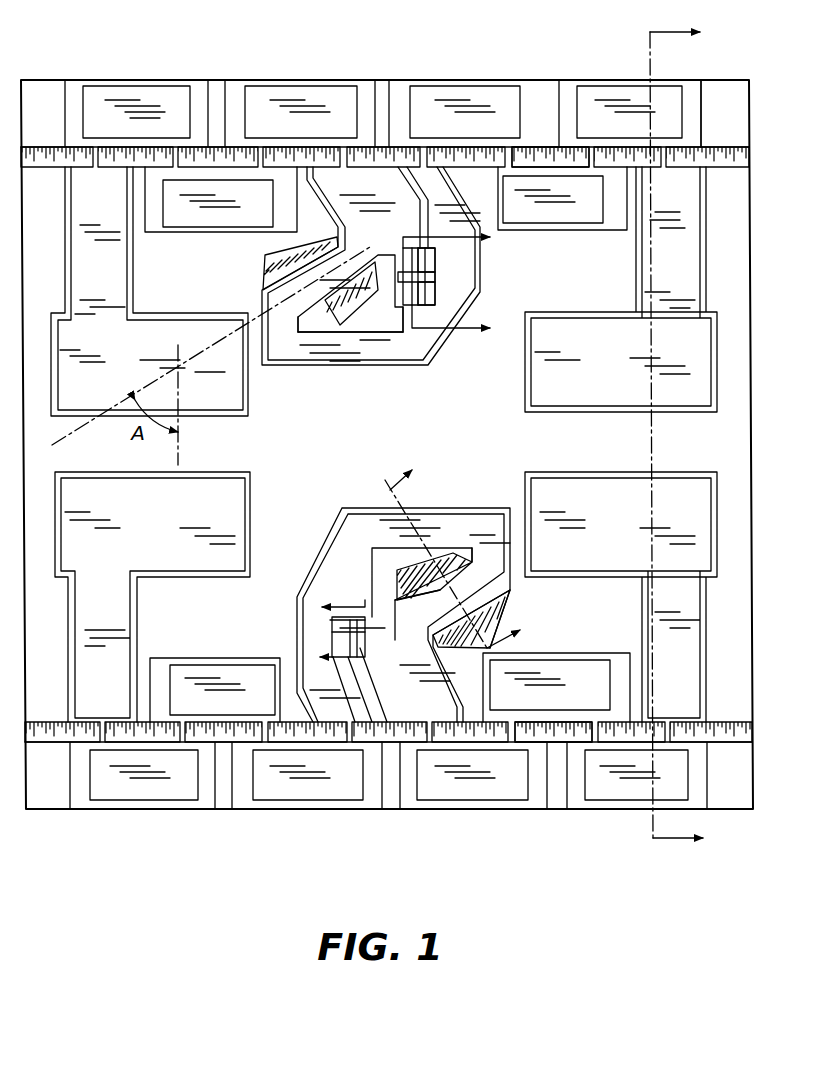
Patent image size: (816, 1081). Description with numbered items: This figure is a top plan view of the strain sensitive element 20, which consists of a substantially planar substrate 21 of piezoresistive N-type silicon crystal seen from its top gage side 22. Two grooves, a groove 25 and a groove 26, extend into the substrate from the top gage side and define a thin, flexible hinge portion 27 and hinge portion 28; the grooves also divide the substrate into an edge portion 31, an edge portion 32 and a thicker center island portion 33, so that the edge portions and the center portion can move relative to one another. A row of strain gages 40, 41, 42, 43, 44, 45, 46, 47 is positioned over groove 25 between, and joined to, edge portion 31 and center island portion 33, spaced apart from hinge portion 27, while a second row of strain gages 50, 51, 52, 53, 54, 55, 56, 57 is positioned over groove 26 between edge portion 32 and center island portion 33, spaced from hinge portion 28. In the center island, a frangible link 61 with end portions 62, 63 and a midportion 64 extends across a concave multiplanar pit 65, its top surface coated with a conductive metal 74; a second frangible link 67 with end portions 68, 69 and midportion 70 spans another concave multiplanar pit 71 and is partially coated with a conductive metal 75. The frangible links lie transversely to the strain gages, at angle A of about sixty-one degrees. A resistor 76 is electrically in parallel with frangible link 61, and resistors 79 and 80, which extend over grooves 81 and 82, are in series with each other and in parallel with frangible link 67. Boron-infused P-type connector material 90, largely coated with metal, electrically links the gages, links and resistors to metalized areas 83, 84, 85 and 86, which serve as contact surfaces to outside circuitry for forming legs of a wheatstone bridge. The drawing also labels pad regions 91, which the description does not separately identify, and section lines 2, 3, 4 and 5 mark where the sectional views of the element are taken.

The strain sensitive element 20 is at (140, 838).
The substrate 21 is at (88, 80).
The top gage side 22 is at (210, 800).
The groove 25 is at (600, 736).
The groove 26 is at (722, 152).
The hinge portion 27 is at (495, 736).
The hinge portion 28 is at (561, 147).
The edge portion 31 is at (390, 800).
The edge portion 32 is at (383, 90).
The center island portion 33 is at (386, 444).
The strain gage 40 is at (660, 736).
The strain gage 41 is at (605, 736).
The strain gage 42 is at (518, 736).
The strain gage 43 is at (432, 736).
The strain gage 44 is at (356, 736).
The strain gage 45 is at (340, 736).
The strain gage 46 is at (183, 735).
The strain gage 47 is at (103, 735).
The strain gage 50 is at (664, 158).
The strain gage 51 is at (592, 158).
The strain gage 52 is at (508, 158).
The strain gage 53 is at (425, 158).
The strain gage 54 is at (342, 158).
The strain gage 55 is at (263, 158).
The strain gage 56 is at (176, 158).
The strain gage 57 is at (99, 158).
The frangible link 61 is at (495, 600).
The end portion 62 is at (415, 700).
The end portion 63 is at (485, 550).
The midportion 64 is at (440, 545).
The concave multiplanar pit 65 is at (397, 580).
The frangible link 67 is at (330, 290).
The end portion 68 is at (365, 300).
The end portion 69 is at (283, 290).
The midportion 70 is at (340, 285).
The concave multiplanar pit 71 is at (266, 262).
The conductive metal 74 is at (505, 577).
The conductive metal 75 is at (350, 325).
The resistor 76 is at (345, 631).
The resistor 79 is at (406, 262).
The resistor 80 is at (430, 298).
The groove 81 is at (430, 262).
The groove 82 is at (432, 277).
The metalized area 83 is at (152, 597).
The metalized area 84 is at (621, 597).
The metalized area 85 is at (149, 291).
The metalized area 86 is at (621, 289).
The electrical connector means 90 is at (195, 84).
The pad 91 is at (460, 95).
The section line 2- 2 is at (683, 436).
The section line 3- 3 is at (462, 547).
The section line 4- 4 is at (333, 634).
The section line 5- 5 is at (460, 284).